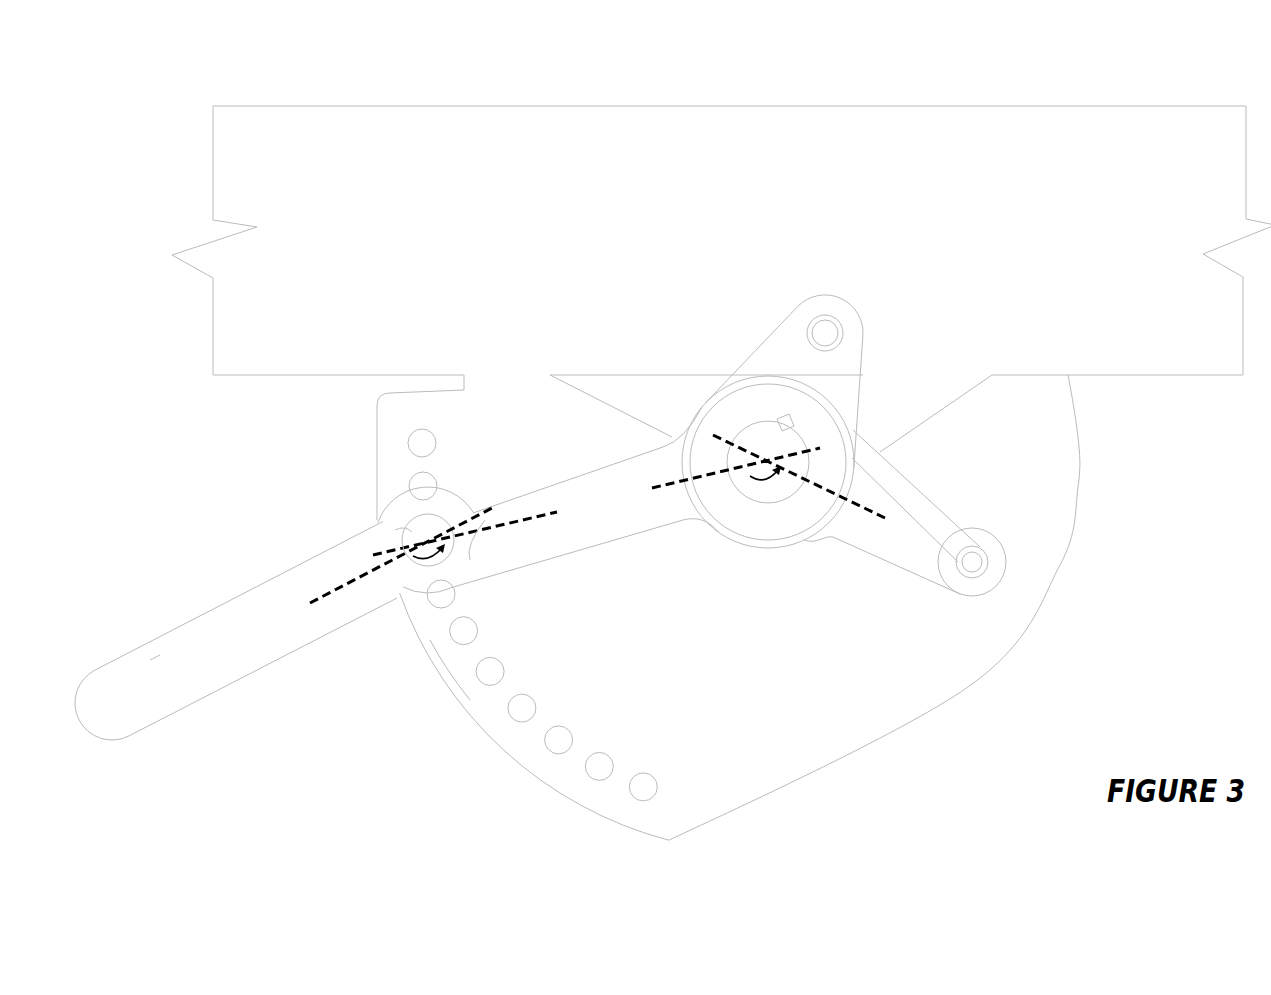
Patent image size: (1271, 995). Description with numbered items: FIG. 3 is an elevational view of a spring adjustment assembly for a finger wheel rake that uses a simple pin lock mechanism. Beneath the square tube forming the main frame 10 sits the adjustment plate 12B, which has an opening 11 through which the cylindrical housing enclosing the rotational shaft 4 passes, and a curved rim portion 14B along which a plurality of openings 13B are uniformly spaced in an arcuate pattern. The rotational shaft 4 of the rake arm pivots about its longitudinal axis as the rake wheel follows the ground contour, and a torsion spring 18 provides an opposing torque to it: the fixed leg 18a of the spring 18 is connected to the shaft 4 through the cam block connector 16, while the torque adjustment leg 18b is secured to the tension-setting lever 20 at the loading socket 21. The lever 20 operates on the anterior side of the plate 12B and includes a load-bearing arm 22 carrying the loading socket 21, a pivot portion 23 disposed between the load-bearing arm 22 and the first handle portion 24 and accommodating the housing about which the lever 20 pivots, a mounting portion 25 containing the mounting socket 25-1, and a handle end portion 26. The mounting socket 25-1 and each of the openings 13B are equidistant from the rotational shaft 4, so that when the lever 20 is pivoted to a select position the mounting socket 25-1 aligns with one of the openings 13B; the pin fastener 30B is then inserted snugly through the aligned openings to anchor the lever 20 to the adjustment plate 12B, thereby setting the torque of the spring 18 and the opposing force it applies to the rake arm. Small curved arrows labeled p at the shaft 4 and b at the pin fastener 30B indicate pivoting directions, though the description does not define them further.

The main frame 10 is at (594, 245).
The opening 11 is at (937, 393).
The adjustment plate 12B is at (721, 661).
The openings 13B is at (597, 772).
The curved rim portion 14B is at (462, 707).
The rotational shaft 4 is at (762, 437).
The pivot portion 23 is at (757, 555).
The cam block connector 16 is at (829, 397).
The fixed leg 18a is at (825, 330).
The torsion spring 18 is at (920, 507).
The torque adjustment leg 18b is at (978, 560).
The loading socket 21 is at (987, 567).
The load-bearing arm 22 is at (923, 548).
The first handle portion 24 is at (620, 514).
The pivot direction p is at (765, 484).
The pin fastener 30B is at (434, 520).
The mounting portion 25 is at (402, 508).
The mounting socket 25-1 is at (398, 535).
The handle end portion 26 is at (283, 624).
The rotation direction b is at (428, 557).
The tension-setting lever 20 is at (219, 586).